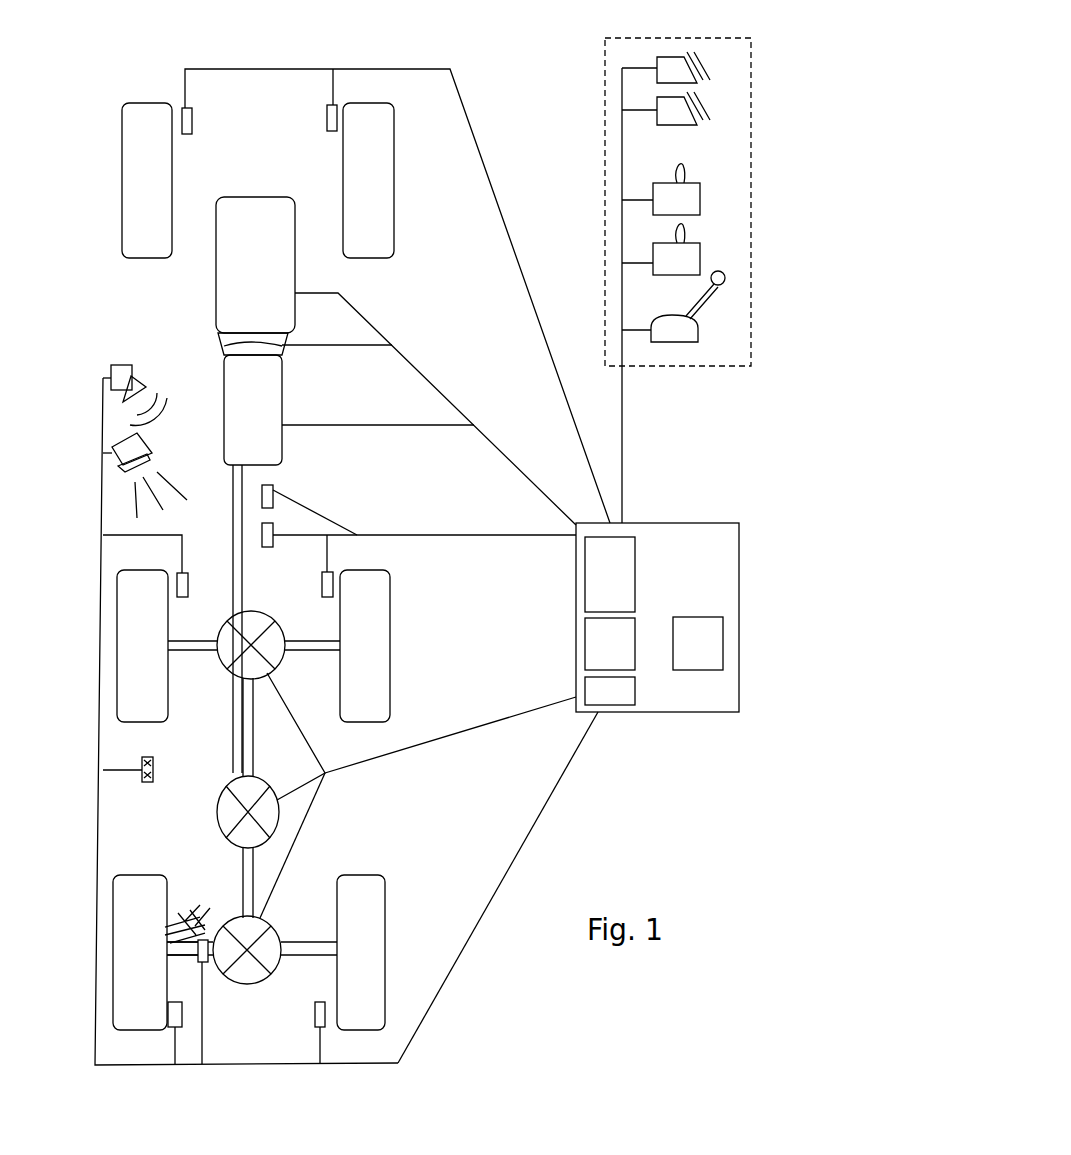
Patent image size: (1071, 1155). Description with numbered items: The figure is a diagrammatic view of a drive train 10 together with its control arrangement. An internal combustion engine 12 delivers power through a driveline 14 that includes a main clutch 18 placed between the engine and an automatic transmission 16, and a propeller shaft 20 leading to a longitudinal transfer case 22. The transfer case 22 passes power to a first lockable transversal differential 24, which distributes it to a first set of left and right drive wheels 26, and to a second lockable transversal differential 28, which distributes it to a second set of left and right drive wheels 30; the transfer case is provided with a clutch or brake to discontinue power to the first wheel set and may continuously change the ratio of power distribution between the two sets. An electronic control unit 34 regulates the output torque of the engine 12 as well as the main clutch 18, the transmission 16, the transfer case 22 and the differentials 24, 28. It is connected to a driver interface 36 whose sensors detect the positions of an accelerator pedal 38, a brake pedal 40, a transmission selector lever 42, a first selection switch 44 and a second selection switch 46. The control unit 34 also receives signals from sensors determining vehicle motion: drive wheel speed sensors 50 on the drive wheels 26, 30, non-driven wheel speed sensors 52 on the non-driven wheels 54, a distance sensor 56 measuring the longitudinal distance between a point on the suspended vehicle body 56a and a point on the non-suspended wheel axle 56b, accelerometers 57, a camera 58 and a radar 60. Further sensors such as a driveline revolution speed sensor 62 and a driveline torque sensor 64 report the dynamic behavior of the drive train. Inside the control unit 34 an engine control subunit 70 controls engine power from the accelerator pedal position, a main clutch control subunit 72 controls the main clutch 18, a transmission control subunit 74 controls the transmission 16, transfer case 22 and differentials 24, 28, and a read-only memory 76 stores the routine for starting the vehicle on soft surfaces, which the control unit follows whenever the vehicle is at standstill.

The drive train 10 is at (172, 355).
The internal combustion engine 12 is at (237, 310).
The driveline 14 is at (112, 508).
The automatic transmission 16 is at (258, 415).
The main clutch 18 is at (258, 343).
The propeller shaft 20 is at (240, 537).
The longitudinal transfer case 22 is at (235, 815).
The first lockable transversal differential 24 is at (225, 655).
The first set of drive wheels 26 is at (137, 637).
The second lockable transversal differential 28 is at (270, 950).
The second set of drive wheels 30 is at (147, 893).
The electronic control unit 34 is at (698, 523).
The driver interface 36 is at (703, 366).
The accelerator pedal 38 is at (673, 70).
The brake pedal 40 is at (673, 112).
The transmission selector lever 42 is at (670, 330).
The first selection switch 44 is at (670, 203).
The second selection switch 46 is at (675, 252).
The drive wheel speed sensors 50 is at (178, 580).
The non-driven wheel speed sensors 52 is at (192, 112).
The non-driven wheels 54 is at (138, 172).
The distance sensor 56 is at (203, 960).
The vehicle body 56a is at (183, 910).
The wheel axle 56b is at (172, 952).
The accelerometers 57 is at (142, 762).
The camera 58 is at (112, 462).
The radar 60 is at (111, 372).
The driveline revolution speed sensor 62 is at (275, 493).
The driveline torque sensor 64 is at (267, 549).
The engine control subunit 70 is at (610, 574).
The main clutch control subunit 72 is at (610, 644).
The transmission control subunit 74 is at (610, 691).
The read-only memory 76 is at (698, 643).